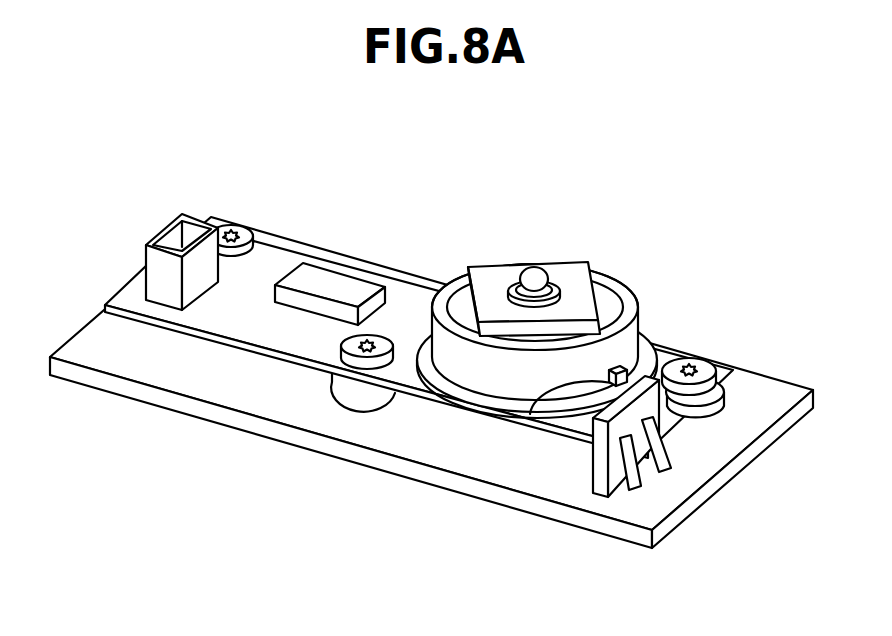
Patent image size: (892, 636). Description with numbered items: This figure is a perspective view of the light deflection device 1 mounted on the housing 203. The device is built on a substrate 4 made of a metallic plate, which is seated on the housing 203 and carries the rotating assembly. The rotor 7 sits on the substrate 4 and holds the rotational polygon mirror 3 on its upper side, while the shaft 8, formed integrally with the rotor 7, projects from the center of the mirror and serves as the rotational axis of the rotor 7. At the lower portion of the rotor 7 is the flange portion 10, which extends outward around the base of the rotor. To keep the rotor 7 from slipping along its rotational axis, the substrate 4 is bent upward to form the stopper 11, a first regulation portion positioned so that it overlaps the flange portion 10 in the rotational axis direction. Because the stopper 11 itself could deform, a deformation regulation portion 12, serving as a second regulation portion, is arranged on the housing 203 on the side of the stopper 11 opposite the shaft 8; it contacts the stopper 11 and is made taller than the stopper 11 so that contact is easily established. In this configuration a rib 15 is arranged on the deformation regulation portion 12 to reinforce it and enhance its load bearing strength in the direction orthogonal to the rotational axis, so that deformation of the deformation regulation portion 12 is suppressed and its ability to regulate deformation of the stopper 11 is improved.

The light deflection device 1 is at (437, 331).
The rotational polygon mirror 3 is at (573, 273).
The substrate 4 is at (283, 257).
The rotor 7 is at (440, 305).
The shaft 8 is at (533, 277).
The flange portion 10 is at (443, 383).
The stopper 11 is at (547, 393).
The deformation regulation portion 12 is at (650, 410).
The rib 15 is at (640, 480).
The housing 203 is at (225, 383).